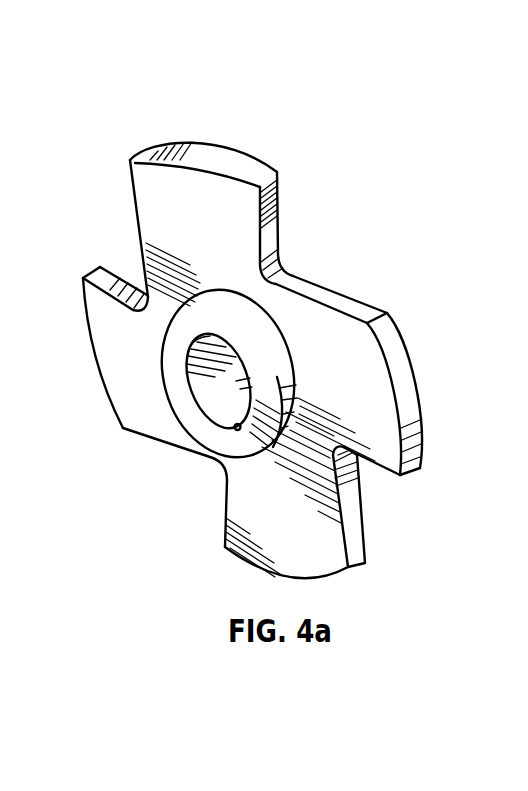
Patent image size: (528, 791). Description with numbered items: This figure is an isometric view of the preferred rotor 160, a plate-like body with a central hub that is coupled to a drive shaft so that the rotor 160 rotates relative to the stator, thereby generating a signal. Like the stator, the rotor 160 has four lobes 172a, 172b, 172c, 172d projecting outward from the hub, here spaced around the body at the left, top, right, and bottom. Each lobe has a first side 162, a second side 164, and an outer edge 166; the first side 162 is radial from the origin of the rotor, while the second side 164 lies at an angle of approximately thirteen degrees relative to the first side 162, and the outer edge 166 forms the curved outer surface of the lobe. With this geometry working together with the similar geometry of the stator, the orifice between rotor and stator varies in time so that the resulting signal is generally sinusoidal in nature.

The rotor 160 is at (273, 326).
The first side 162 is at (270, 230).
The second side 164 is at (367, 307).
The outer edge 166 is at (253, 167).
The lobe 172a is at (155, 376).
The lobe 172b is at (223, 221).
The lobe 172c is at (360, 394).
The lobe 172d is at (300, 527).